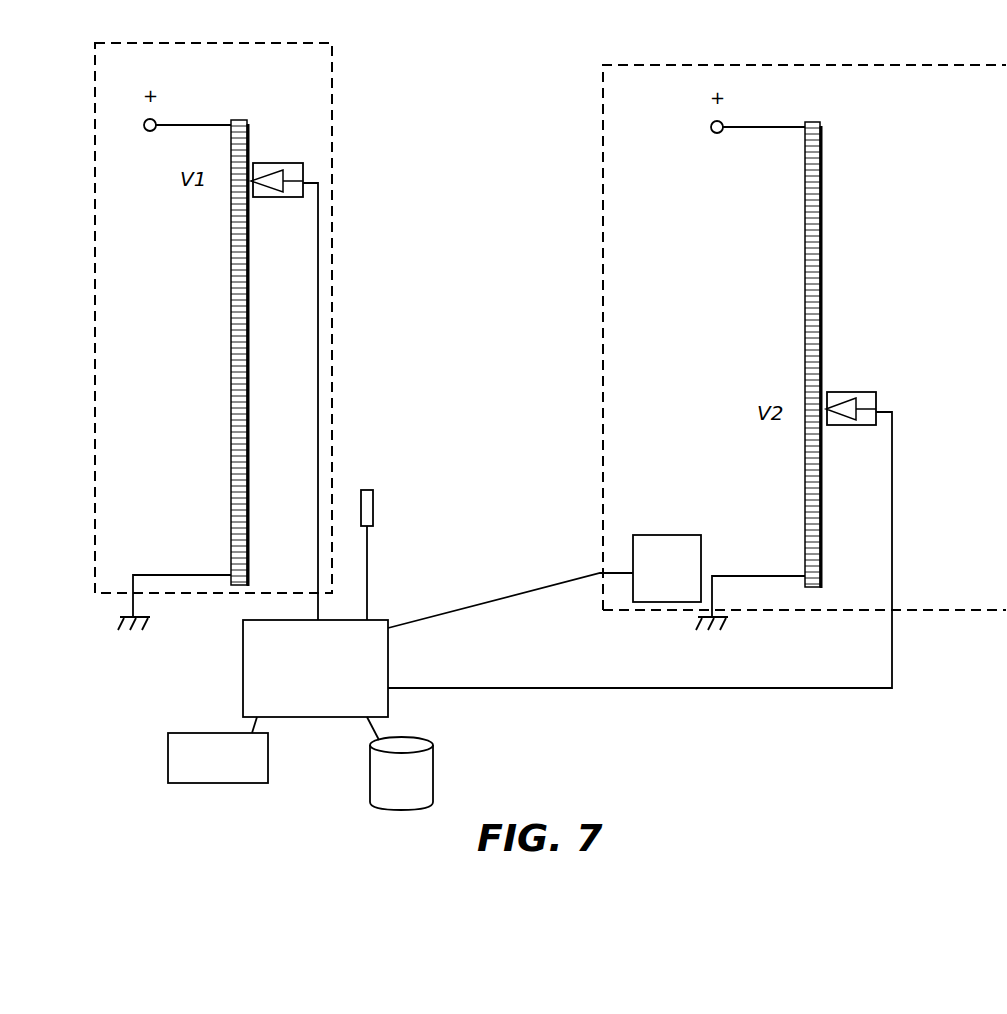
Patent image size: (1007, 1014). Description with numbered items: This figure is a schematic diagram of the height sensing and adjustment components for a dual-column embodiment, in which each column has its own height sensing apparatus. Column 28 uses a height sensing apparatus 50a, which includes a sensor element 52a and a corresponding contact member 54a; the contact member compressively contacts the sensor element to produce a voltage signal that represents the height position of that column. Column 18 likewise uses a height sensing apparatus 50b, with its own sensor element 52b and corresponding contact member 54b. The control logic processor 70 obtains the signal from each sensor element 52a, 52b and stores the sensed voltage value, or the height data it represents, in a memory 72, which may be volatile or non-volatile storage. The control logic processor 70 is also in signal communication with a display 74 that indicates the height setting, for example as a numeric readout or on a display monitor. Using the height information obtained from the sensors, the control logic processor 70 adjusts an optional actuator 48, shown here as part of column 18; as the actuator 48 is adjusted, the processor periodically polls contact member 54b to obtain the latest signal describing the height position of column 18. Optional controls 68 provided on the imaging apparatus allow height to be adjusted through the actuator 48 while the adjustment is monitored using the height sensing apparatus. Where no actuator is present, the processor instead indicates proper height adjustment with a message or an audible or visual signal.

The column 18 is at (601, 413).
The column 28 is at (93, 477).
The actuator 48 is at (671, 535).
The height sensing apparatus 50a is at (403, 277).
The height sensing apparatus 50b is at (885, 279).
The sensor element 52a is at (231, 250).
The sensor element 52b is at (805, 227).
The contact member 54a is at (285, 178).
The contact member 54b is at (853, 400).
The controls 68 is at (374, 511).
The control logic processor 70 is at (243, 666).
The memory 72 is at (370, 775).
The display 74 is at (190, 733).